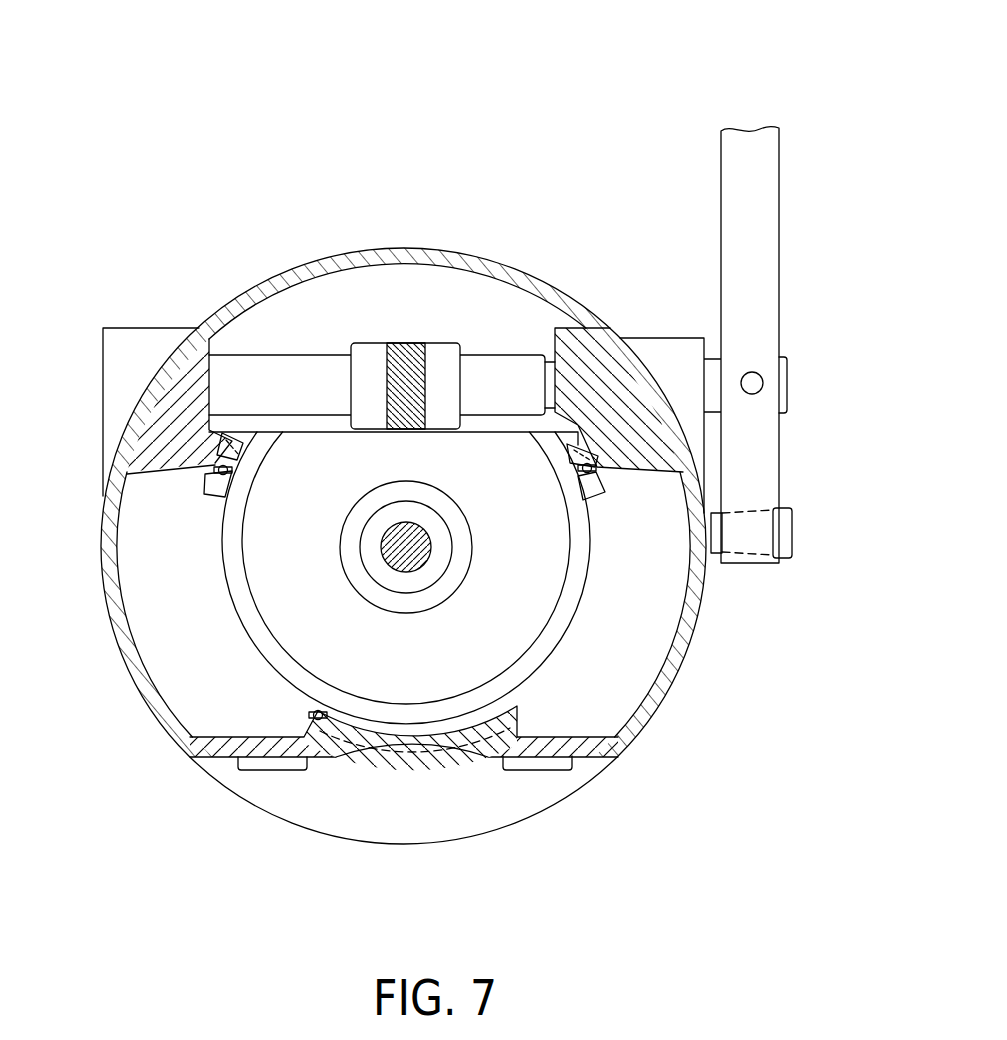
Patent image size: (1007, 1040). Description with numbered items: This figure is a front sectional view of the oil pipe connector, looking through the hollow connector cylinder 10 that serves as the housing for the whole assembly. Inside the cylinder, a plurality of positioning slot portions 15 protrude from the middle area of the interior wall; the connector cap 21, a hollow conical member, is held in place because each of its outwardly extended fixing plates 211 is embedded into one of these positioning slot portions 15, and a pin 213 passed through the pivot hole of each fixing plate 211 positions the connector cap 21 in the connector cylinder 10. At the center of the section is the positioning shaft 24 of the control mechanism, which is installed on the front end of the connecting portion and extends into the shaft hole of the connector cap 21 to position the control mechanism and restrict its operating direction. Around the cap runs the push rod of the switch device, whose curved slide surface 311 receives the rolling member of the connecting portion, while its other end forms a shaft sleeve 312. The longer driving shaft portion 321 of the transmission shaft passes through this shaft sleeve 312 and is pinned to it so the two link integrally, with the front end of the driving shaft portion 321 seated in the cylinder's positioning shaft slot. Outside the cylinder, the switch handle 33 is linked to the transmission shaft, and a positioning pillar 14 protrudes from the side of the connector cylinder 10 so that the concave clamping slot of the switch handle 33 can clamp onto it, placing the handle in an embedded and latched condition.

The connector cylinder 10 is at (705, 712).
The positioning pillar 14 is at (784, 526).
The positioning slot portion 15 is at (220, 462).
The connector cap 21 is at (560, 643).
The positioning shaft 24 is at (408, 558).
The switch handle 33 is at (768, 180).
The fixing plate 211 is at (213, 468).
The pin 213 is at (218, 500).
The curved slide surface 311 is at (490, 712).
The shaft sleeve 312 is at (439, 343).
The driving shaft portion 321 is at (495, 372).